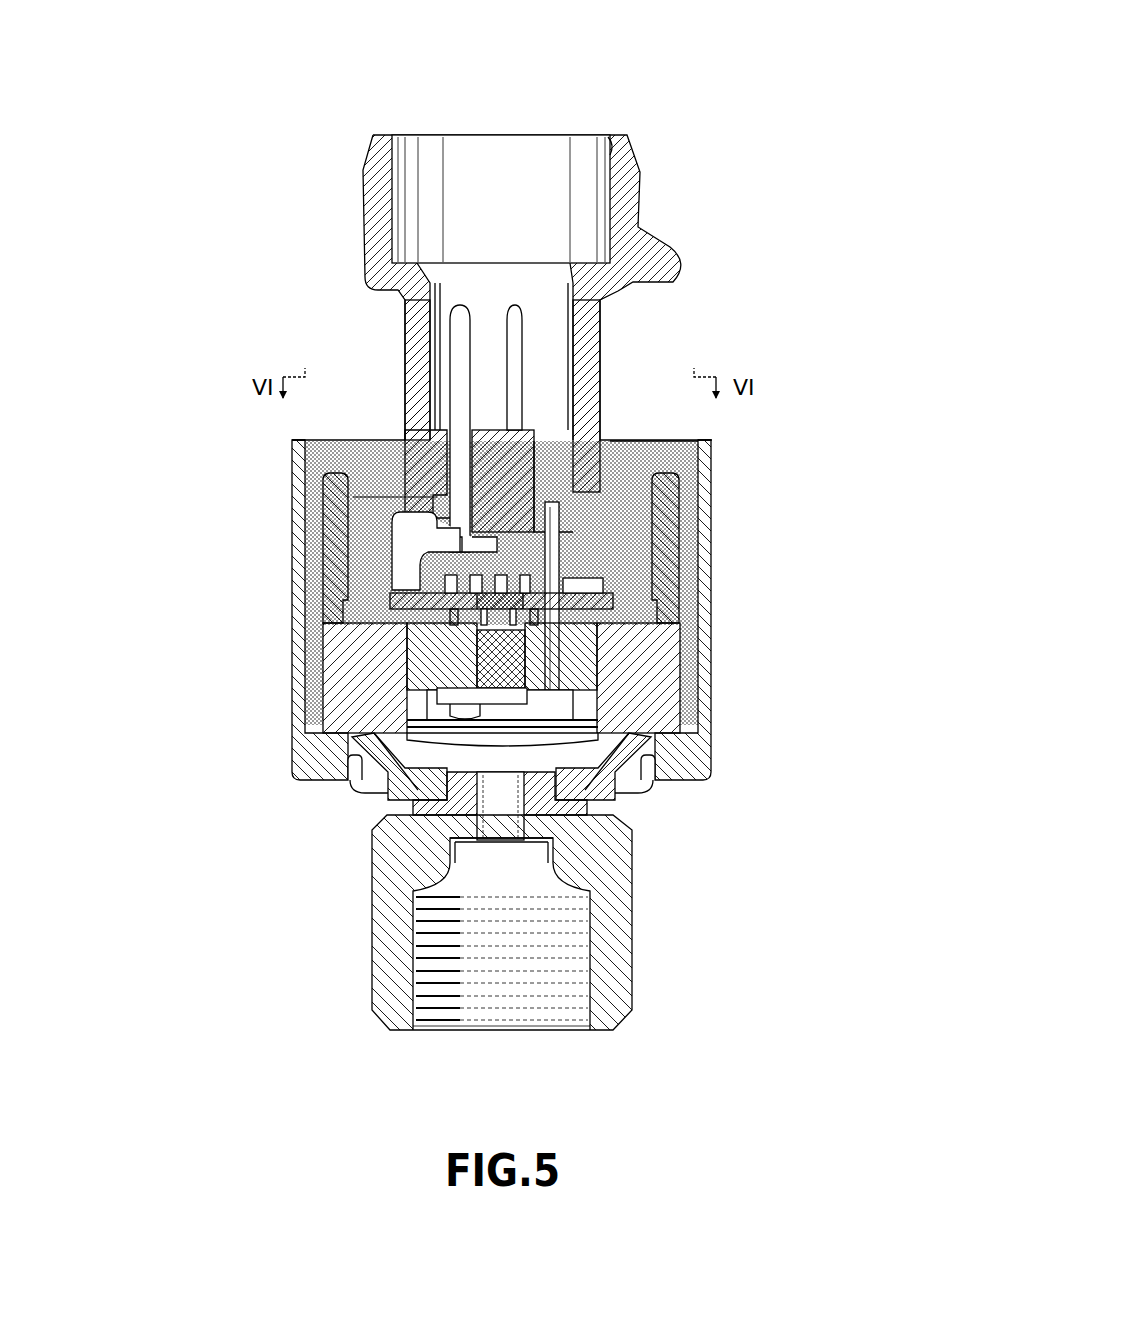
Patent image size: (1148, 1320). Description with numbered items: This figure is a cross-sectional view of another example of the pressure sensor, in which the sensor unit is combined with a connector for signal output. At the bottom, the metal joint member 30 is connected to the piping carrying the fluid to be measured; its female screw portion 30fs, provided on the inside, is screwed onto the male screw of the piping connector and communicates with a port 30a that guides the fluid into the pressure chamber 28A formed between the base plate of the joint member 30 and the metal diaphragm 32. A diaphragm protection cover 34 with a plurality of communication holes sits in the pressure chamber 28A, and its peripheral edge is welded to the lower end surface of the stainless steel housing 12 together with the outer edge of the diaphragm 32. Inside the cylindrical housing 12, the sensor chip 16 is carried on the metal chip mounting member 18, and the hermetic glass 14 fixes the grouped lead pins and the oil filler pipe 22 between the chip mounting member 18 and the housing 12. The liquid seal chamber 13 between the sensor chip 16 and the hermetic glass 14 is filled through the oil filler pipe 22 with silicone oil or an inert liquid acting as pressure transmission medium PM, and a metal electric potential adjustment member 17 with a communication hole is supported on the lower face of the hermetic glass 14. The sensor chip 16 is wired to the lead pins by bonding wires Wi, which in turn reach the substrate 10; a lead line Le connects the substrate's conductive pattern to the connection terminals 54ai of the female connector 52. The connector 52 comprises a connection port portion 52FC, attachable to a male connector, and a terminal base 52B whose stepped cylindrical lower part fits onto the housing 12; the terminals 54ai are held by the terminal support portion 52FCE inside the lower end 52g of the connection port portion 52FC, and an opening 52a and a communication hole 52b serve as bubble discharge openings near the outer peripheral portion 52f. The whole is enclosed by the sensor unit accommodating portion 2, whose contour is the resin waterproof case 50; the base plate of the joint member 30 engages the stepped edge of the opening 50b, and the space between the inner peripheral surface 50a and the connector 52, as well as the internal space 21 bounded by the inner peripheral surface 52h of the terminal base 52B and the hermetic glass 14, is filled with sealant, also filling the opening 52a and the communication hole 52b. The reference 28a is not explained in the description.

The sensor unit accommodating portion 2 is at (273, 456).
The substrate 10 is at (372, 560).
The housing 12 is at (700, 640).
The liquid seal chamber 13 is at (440, 703).
The hermetic glass 14 is at (700, 665).
The sensor chip 16 is at (430, 684).
The electric potential adjustment member 17 is at (700, 710).
The chip mounting member 18 is at (420, 638).
The internal space 21 is at (400, 427).
The oil filler pipe 22 is at (700, 568).
The pressure chamber 28A is at (342, 753).
The crimped portion 28a is at (402, 797).
The joint member 30 is at (635, 946).
The port 30a is at (517, 805).
The female screw portion 30fs is at (575, 1005).
The diaphragm 32 is at (680, 772).
The diaphragm protection cover 34 is at (665, 800).
The waterproof case 50 is at (710, 472).
The inner peripheral surface 50a is at (655, 478).
The opening 50b is at (357, 786).
The female connector 52 is at (678, 262).
The opening 52a is at (548, 482).
The communication hole 52b is at (590, 470).
The terminal base 52B is at (330, 480).
The outer peripheral portion 52f is at (405, 472).
The connection port portion 52FC is at (612, 135).
The terminal support portion 52FCE is at (700, 530).
The lower end 52g is at (700, 556).
The inner peripheral surface 52h is at (700, 588).
The connection terminals 54ai is at (463, 305).
The lead line Le is at (392, 522).
The pressure transmission medium PM is at (700, 735).
The bonding wires Wi is at (500, 806).